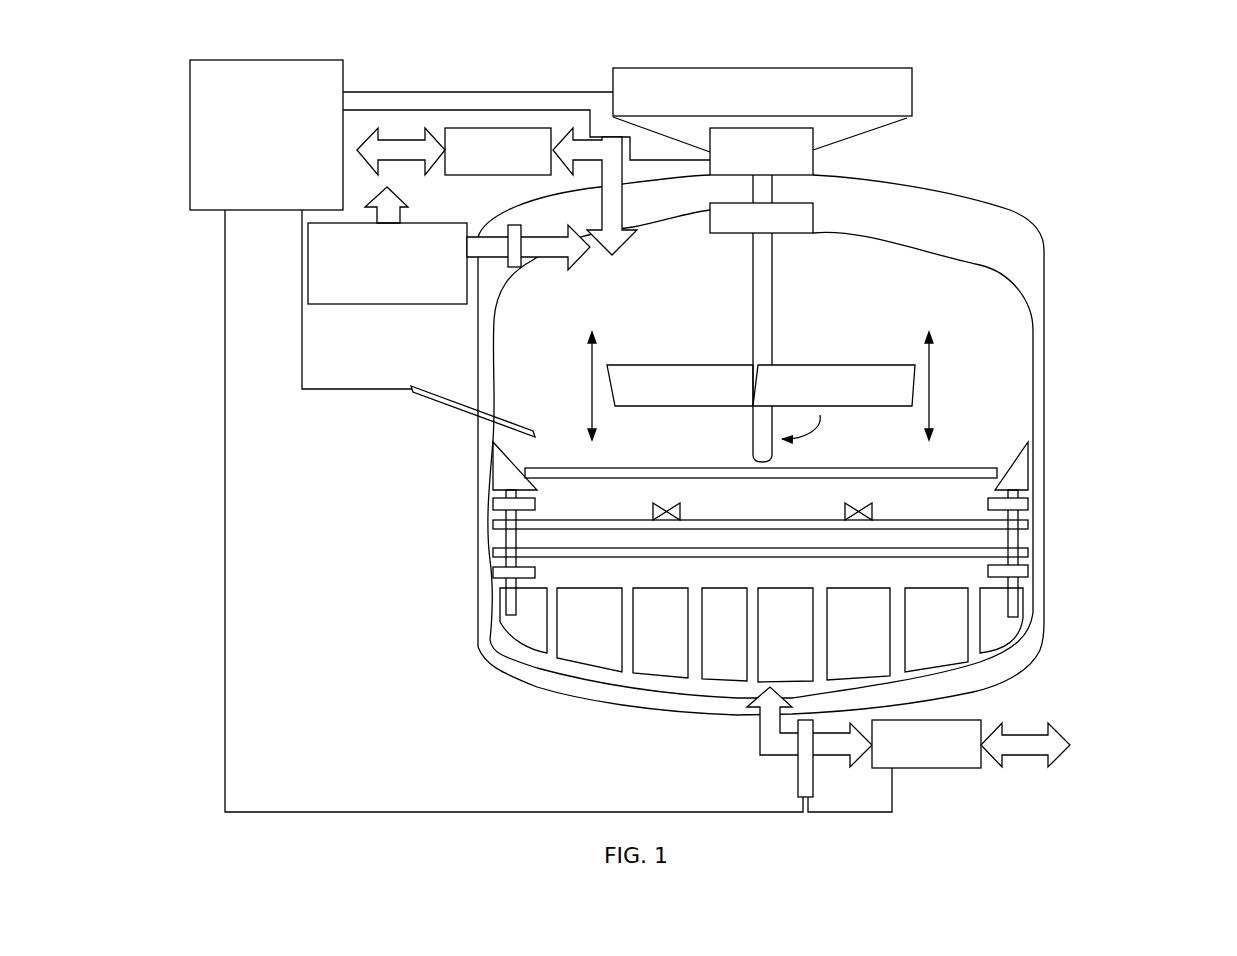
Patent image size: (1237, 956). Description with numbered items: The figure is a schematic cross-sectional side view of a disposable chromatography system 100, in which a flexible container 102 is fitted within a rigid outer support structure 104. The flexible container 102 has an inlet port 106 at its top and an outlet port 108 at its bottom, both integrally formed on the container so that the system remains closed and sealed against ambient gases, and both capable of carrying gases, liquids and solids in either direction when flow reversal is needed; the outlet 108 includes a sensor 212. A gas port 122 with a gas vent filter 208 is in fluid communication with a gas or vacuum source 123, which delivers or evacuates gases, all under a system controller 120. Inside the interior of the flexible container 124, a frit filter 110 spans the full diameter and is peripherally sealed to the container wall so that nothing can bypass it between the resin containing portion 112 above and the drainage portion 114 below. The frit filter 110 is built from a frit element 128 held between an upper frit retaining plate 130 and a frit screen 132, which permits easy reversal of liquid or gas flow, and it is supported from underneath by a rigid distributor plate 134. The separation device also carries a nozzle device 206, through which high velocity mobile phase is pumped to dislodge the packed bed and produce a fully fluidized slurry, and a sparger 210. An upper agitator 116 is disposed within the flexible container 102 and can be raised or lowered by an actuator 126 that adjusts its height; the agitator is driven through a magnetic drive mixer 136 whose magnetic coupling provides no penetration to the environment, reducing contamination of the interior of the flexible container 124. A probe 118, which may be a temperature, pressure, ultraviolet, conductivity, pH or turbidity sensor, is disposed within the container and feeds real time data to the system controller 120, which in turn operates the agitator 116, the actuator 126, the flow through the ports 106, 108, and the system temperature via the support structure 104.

The disposable chromatography system 100 is at (1129, 72).
The flexible container 102 is at (977, 262).
The support structure 104 is at (1047, 272).
The inlet port 106 is at (591, 148).
The outlet port 108 is at (759, 742).
The frit filter 110 is at (950, 501).
The resin containing portion 112 is at (980, 445).
The drainage portion 114 is at (950, 568).
The upper agitator 116 is at (831, 393).
The probe 118 is at (450, 408).
The system controller 120 is at (251, 186).
The gas port 122 is at (497, 250).
The gas or vacuum source 123 is at (373, 299).
The interior of the flexible container 124 is at (821, 307).
The actuator 126 is at (748, 102).
The frit element 128 is at (492, 524).
The upper frit retaining plate 130 is at (612, 468).
The frit screen 132 is at (492, 552).
The rigid distributor plate 134 is at (1016, 640).
The magnetic drive mixer 136 is at (821, 204).
The nozzle device 206 is at (654, 512).
The gas vent filter 208 is at (517, 228).
The sparger 210 is at (844, 512).
The sensor 212 is at (797, 788).